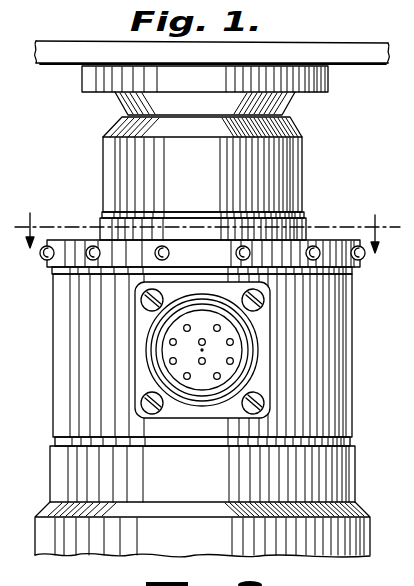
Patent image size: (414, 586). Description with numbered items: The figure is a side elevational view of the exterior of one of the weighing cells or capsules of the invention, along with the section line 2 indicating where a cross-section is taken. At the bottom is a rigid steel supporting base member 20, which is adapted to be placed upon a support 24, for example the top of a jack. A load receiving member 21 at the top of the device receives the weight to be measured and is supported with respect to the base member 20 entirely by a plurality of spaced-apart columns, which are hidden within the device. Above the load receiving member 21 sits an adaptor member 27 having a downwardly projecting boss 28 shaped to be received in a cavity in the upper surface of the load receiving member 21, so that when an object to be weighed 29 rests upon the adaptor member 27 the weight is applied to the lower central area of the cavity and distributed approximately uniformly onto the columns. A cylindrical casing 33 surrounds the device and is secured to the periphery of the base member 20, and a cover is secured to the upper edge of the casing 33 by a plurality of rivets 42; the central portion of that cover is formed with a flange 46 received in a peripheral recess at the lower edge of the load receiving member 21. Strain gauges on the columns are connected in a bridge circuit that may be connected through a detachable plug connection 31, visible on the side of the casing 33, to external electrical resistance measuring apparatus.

The section line 2- 2 is at (207, 219).
The supporting base member 20 is at (333, 483).
The load receiving member 21 is at (306, 161).
The support 24 is at (362, 536).
The adaptor member 27 is at (82, 90).
The downwardly projecting boss 28 is at (122, 113).
The object to be weighed 29 is at (362, 64).
The detachable plug connection 31 is at (150, 342).
The cylindrical casing 33 is at (353, 304).
The rivets 42 is at (46, 256).
The flange 46 is at (306, 228).